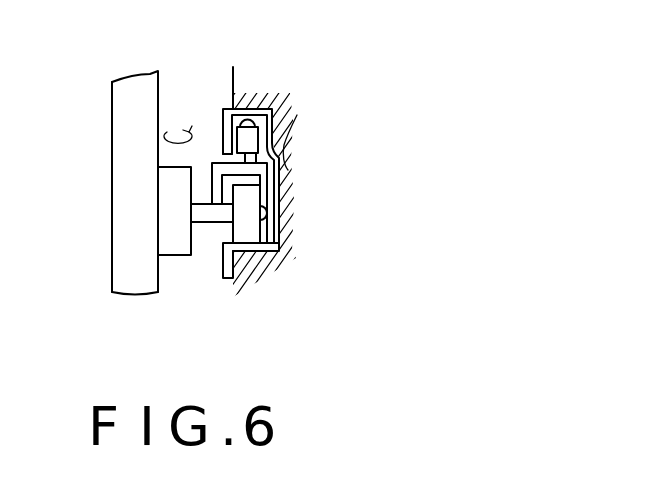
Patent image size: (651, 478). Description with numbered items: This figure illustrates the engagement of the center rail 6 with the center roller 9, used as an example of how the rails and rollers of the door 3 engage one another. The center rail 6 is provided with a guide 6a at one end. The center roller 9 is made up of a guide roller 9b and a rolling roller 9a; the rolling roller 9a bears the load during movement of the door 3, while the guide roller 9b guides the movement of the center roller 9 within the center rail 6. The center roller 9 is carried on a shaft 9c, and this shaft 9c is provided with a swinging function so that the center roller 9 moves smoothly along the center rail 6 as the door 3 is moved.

The door 3 is at (158, 75).
The center rail 6 is at (286, 170).
The guide 6a is at (223, 110).
The center roller 9 is at (178, 258).
The rolling roller 9a is at (250, 226).
The guide roller 9b is at (255, 133).
The shaft 9c is at (168, 223).